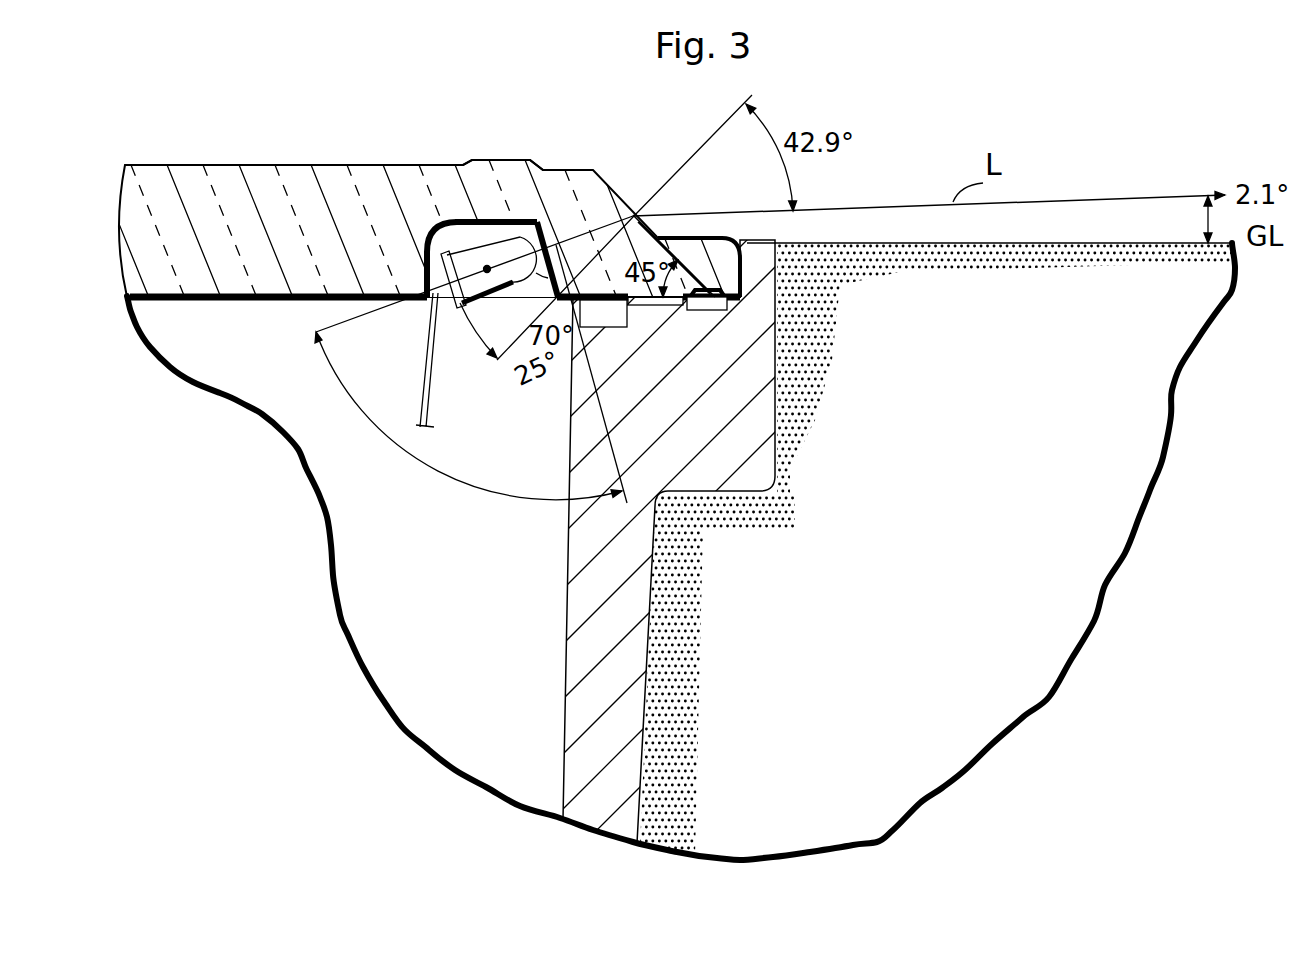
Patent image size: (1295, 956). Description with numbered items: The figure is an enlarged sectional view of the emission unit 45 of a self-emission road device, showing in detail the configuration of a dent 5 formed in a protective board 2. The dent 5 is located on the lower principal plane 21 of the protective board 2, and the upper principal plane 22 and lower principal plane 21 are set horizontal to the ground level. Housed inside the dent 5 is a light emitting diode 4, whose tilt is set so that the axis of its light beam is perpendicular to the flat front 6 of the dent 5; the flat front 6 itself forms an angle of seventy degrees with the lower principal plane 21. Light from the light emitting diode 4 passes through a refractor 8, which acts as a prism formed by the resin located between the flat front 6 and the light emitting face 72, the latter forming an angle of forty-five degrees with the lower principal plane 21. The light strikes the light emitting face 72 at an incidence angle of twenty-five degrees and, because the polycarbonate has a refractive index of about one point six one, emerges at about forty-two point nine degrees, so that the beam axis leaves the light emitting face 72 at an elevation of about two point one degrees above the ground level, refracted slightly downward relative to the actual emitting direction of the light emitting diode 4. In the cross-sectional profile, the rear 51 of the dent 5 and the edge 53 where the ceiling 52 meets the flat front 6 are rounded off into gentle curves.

The protective board 2 is at (190, 203).
The lower principal plane 21 is at (260, 301).
The upper principal plane 22 is at (258, 165).
The light emitting diode 4 is at (457, 332).
The emission unit 45 is at (470, 367).
The dent 5 is at (470, 169).
The rear 51 is at (432, 240).
The ceiling 52 is at (493, 221).
The edge 53 is at (536, 228).
The flat front 6 is at (578, 292).
The refractor 8 is at (598, 255).
The light emitting face 72 is at (645, 235).